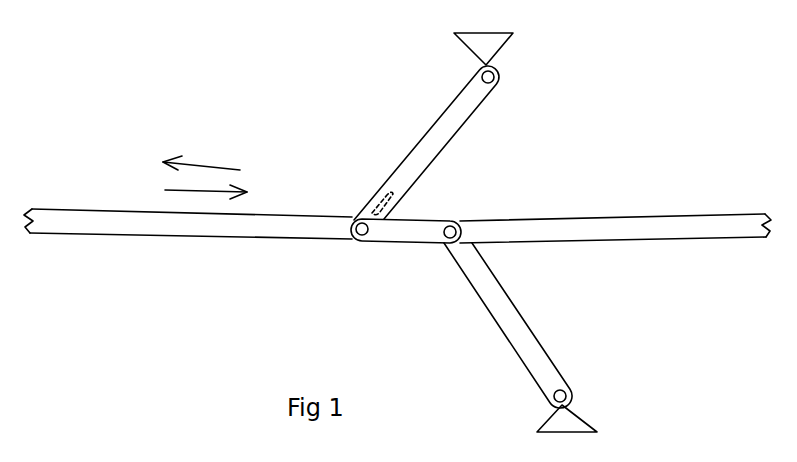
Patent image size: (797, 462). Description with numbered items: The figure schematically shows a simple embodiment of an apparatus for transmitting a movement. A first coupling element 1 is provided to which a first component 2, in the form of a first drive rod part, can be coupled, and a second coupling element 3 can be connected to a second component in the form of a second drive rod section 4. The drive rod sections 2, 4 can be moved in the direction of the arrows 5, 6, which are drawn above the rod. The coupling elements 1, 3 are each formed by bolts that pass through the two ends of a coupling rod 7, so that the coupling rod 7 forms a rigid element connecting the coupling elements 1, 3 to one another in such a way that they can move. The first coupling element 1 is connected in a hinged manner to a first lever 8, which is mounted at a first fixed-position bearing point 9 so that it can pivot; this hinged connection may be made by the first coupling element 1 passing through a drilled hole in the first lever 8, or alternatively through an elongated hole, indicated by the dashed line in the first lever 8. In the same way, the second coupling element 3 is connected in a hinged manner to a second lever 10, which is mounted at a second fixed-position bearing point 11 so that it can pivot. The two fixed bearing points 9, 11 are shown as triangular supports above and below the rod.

The first coupling element 1 is at (362, 243).
The first component 2 is at (187, 233).
The second coupling element 3 is at (452, 224).
The second drive rod section 4 is at (577, 240).
The arrow 5 is at (165, 190).
The arrow 6 is at (163, 160).
The coupling rod 7 is at (402, 242).
The first lever 8 is at (400, 162).
The first fixed-position bearing point 9 is at (490, 70).
The second lever 10 is at (527, 328).
The second fixed-position bearing point 11 is at (568, 393).